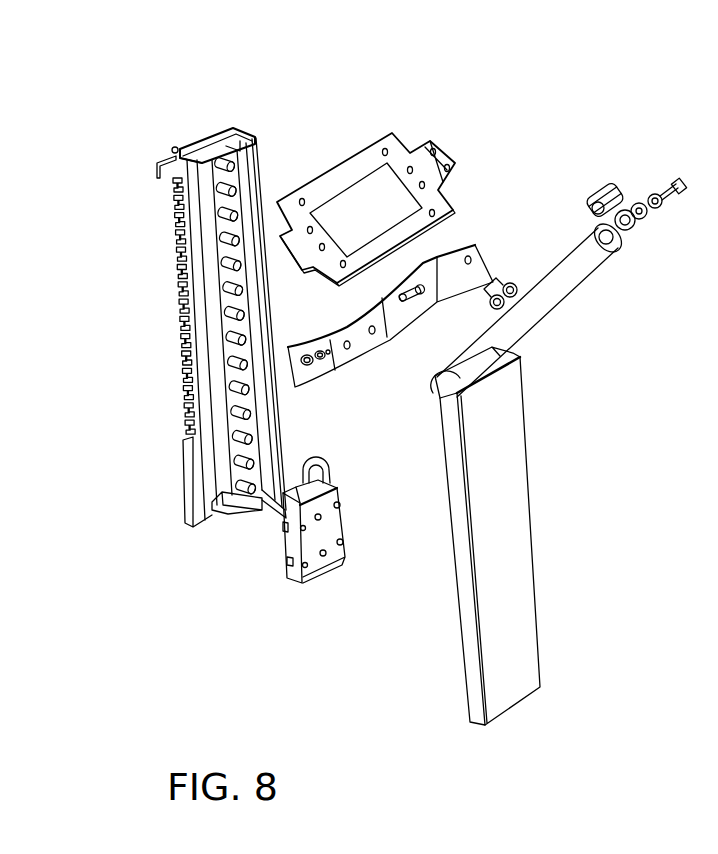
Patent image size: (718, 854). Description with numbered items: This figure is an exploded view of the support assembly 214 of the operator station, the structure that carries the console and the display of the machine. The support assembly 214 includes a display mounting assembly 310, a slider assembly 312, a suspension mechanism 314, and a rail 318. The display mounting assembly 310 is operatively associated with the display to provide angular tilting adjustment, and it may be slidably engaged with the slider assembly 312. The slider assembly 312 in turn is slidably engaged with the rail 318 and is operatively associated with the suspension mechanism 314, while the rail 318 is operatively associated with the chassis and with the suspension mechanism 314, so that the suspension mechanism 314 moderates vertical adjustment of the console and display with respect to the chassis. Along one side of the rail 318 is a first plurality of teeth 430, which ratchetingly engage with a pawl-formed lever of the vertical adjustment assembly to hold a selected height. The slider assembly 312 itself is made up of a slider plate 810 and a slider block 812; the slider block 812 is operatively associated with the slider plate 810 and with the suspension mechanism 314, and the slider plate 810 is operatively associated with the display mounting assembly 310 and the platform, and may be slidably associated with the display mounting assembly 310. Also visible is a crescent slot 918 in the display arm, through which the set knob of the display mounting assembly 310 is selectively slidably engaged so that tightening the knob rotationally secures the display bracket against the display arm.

The support assembly 214 is at (600, 115).
The display mounting assembly 310 is at (455, 127).
The slider assembly 312 is at (380, 675).
The suspension mechanism 314 is at (550, 295).
The rail 318 is at (197, 143).
The first plurality of teeth 430 is at (170, 285).
The slider plate 810 is at (507, 611).
The slider block 812 is at (325, 583).
The crescent slot 918 is at (467, 290).